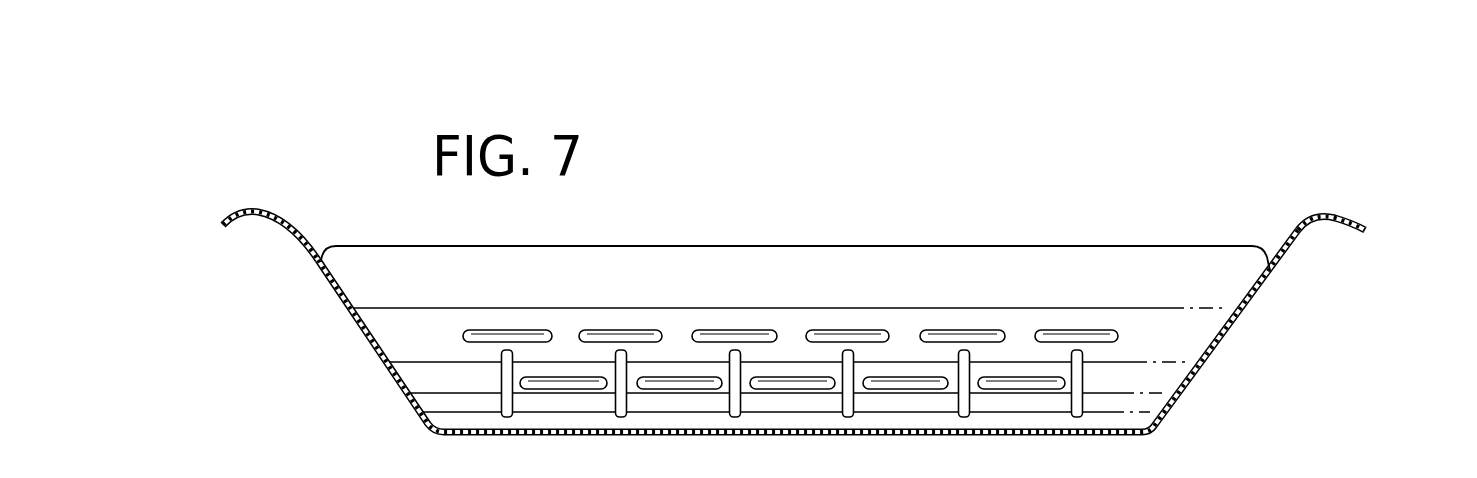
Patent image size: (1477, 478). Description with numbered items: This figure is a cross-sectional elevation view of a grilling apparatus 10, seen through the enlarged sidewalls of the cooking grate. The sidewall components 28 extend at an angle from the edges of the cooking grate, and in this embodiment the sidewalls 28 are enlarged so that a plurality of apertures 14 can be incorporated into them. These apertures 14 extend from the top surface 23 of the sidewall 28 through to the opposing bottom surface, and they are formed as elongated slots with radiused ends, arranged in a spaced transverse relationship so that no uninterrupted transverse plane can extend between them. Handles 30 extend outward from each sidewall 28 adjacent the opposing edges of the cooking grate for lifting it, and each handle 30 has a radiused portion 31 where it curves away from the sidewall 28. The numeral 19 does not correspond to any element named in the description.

The grilling apparatus 10 is at (1077, 79).
The apertures 14 is at (1077, 407).
The slot 19 is at (607, 333).
The top surface 23 is at (1082, 285).
The sidewall components 28 is at (882, 243).
The handles 30 is at (231, 217).
The radiused portion 31 is at (277, 222).